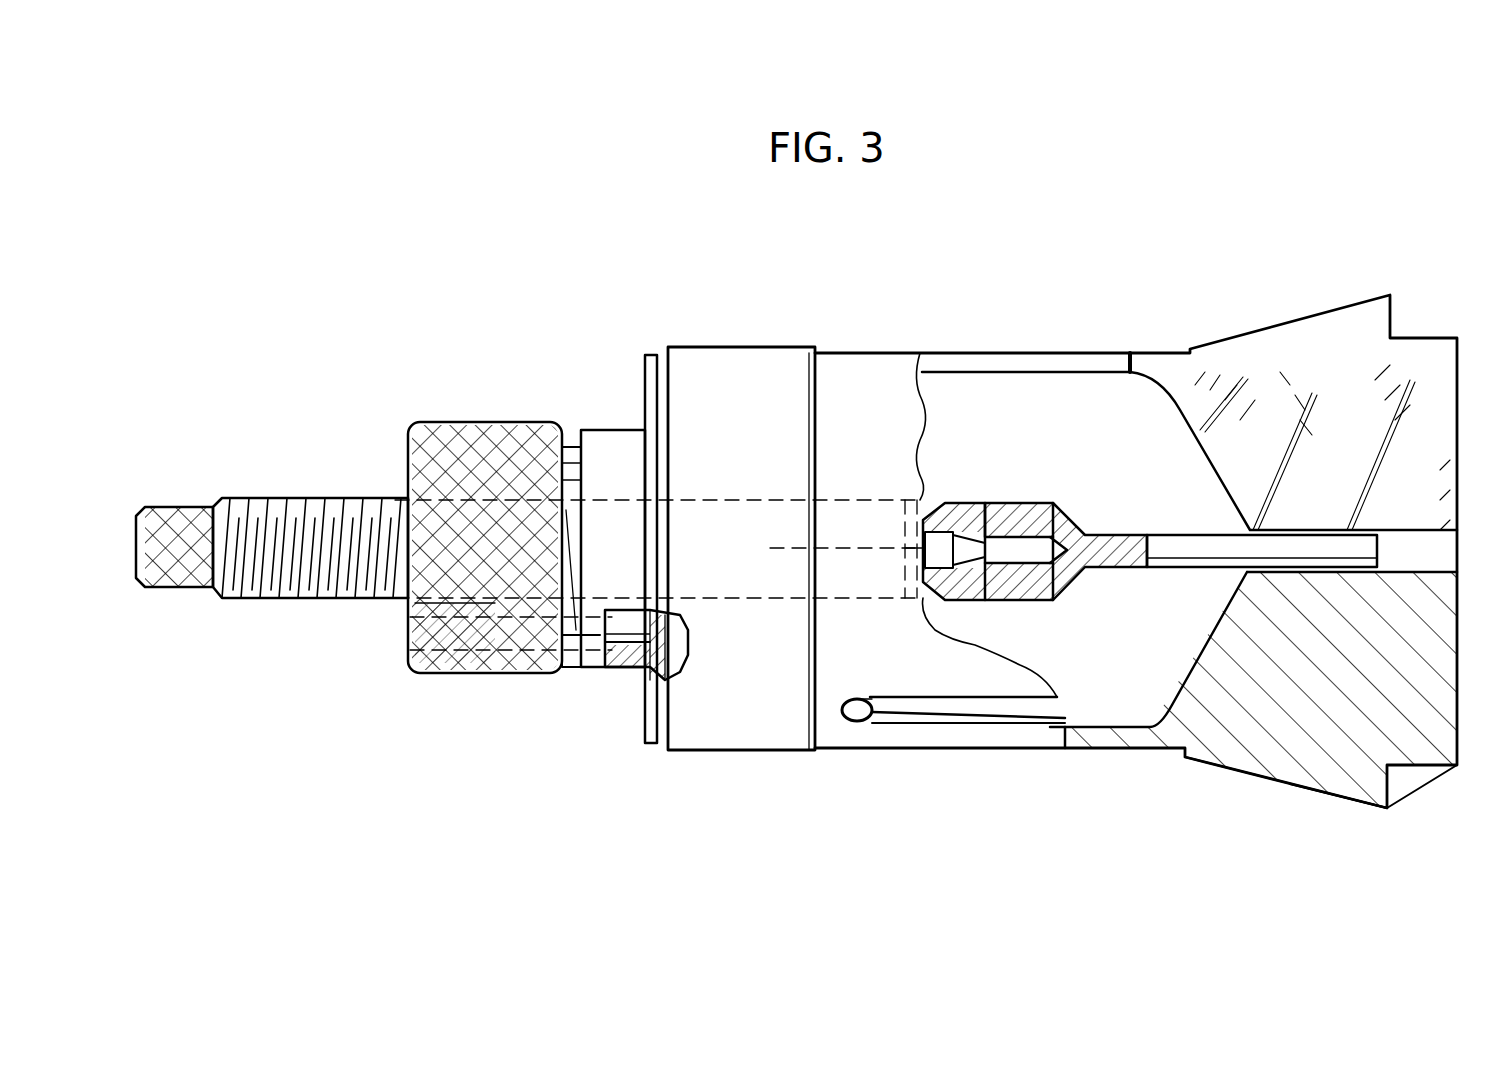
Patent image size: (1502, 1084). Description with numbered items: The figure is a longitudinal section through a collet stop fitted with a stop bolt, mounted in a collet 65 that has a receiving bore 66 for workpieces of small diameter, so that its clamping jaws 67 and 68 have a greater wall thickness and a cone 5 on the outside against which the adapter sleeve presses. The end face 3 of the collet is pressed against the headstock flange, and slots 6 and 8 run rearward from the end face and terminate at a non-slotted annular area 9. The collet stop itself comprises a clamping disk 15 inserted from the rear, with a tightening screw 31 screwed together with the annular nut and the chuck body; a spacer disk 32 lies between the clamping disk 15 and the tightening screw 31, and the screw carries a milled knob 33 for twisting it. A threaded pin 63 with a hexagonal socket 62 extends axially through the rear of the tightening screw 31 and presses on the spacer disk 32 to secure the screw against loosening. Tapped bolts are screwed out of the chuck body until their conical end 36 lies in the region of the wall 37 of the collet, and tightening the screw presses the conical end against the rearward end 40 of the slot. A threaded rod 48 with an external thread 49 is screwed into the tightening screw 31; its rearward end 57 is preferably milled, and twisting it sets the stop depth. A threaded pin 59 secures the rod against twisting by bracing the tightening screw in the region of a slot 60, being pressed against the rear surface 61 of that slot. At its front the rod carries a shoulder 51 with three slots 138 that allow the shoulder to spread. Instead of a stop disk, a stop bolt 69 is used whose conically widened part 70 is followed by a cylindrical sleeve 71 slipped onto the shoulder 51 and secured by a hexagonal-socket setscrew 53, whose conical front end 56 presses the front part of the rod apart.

The end face 3 is at (1458, 633).
The cone 5 is at (1319, 795).
The slot 6 is at (1122, 352).
The slot 8 is at (918, 700).
The non-slotted annular area 9 is at (729, 375).
The clamping disk 15 is at (650, 740).
The tightening screw 31 is at (612, 450).
The spacer disk 32 is at (688, 655).
The milled knob 33 is at (453, 445).
The conical end 36 is at (858, 716).
The wall 37 is at (967, 735).
The rearward end of slot 40 is at (853, 702).
The threaded rod 48 is at (299, 601).
The external thread 49 is at (292, 512).
The shoulder 51 is at (1033, 530).
The hexagonal-socket setscrew 53 is at (940, 545).
The conical front end 56 is at (978, 548).
The rearward end 57 is at (177, 565).
The threaded pin 59 is at (540, 445).
The slot 60 is at (580, 607).
The rear surface 61 is at (575, 437).
The hexagonal socket 62 is at (405, 635).
The threaded pin 63 is at (625, 625).
The collet 65 is at (1251, 783).
The receiving bore 66 is at (1397, 533).
The clamping jaw 67 is at (1300, 340).
The clamping jaw 68 is at (1360, 758).
The stop bolt 69 is at (1170, 545).
The conically widened part 70 is at (1068, 525).
The cylindrical sleeve 71 is at (1035, 598).
The slots 138 is at (858, 548).